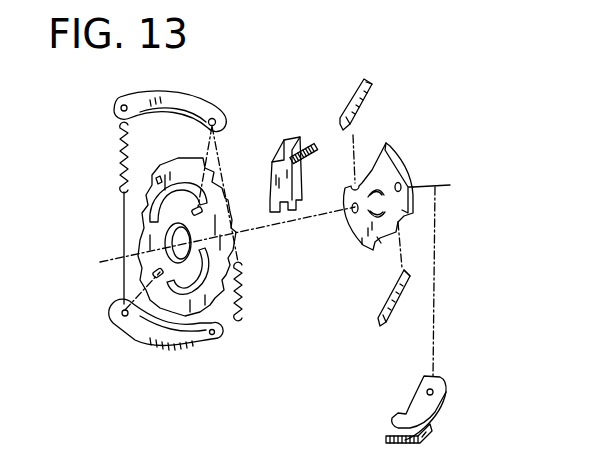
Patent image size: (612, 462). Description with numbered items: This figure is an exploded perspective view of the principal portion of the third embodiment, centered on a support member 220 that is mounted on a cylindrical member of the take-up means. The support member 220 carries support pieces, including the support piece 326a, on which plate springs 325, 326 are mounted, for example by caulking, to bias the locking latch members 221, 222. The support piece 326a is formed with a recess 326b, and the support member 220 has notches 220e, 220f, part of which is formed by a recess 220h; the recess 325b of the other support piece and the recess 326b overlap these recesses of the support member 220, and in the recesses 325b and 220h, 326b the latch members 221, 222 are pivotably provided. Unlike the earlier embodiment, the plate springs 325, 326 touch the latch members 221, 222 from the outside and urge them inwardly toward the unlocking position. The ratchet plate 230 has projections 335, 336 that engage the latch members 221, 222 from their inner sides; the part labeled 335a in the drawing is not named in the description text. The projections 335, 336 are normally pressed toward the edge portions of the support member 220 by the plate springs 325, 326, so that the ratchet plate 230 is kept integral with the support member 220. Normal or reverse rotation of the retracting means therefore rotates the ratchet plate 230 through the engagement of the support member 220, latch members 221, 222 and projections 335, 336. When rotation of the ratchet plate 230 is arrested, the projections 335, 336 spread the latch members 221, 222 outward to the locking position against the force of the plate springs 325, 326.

The support member 220 is at (390, 153).
The notch 220e is at (373, 158).
The notch 220f is at (373, 250).
The recess 220h is at (404, 188).
The locking latch member 221 is at (373, 99).
The locking latch member 222 is at (395, 320).
The ratchet plate 230 is at (216, 226).
The plate spring 325 is at (316, 145).
The recess 325b is at (293, 138).
The plate spring 326 is at (386, 440).
The support piece 326a is at (447, 393).
The recess 326b is at (410, 415).
The projection 335 is at (222, 190).
The bracket 335a is at (280, 167).
The projection 336 is at (142, 282).